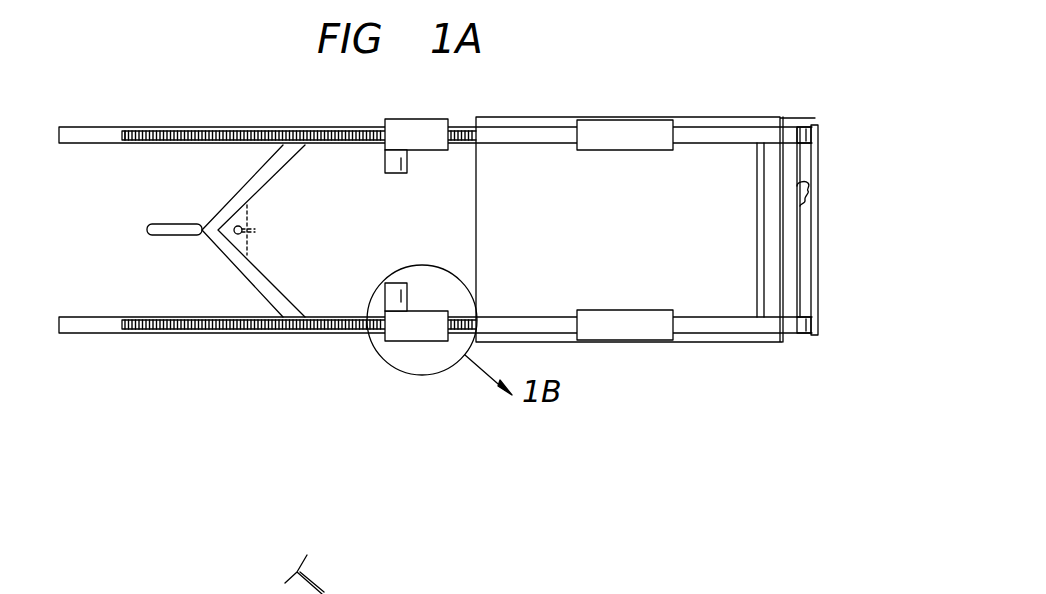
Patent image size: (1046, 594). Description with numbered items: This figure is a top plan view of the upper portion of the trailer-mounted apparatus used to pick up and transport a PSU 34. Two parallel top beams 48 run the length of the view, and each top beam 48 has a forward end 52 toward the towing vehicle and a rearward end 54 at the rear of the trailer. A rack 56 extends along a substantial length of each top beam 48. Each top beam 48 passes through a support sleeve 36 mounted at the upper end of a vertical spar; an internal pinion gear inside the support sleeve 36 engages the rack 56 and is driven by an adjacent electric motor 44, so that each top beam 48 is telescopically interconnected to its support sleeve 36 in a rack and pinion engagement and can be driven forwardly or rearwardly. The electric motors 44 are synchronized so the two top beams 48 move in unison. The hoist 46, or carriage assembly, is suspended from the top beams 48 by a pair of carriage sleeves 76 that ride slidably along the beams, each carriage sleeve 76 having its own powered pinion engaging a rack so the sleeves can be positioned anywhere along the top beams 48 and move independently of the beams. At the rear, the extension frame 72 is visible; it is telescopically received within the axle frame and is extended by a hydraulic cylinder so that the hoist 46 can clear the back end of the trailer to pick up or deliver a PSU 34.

The PSU 34 is at (745, 243).
The support sleeve 36 is at (433, 124).
The electric motor 44 is at (408, 163).
The hoist 46 is at (660, 97).
The top beam 48 is at (693, 130).
The forward end 52 is at (90, 127).
The rearward end 54 is at (817, 135).
The rack 56 is at (173, 128).
The extension frame 72 is at (818, 240).
The carriage sleeve 76 is at (632, 128).